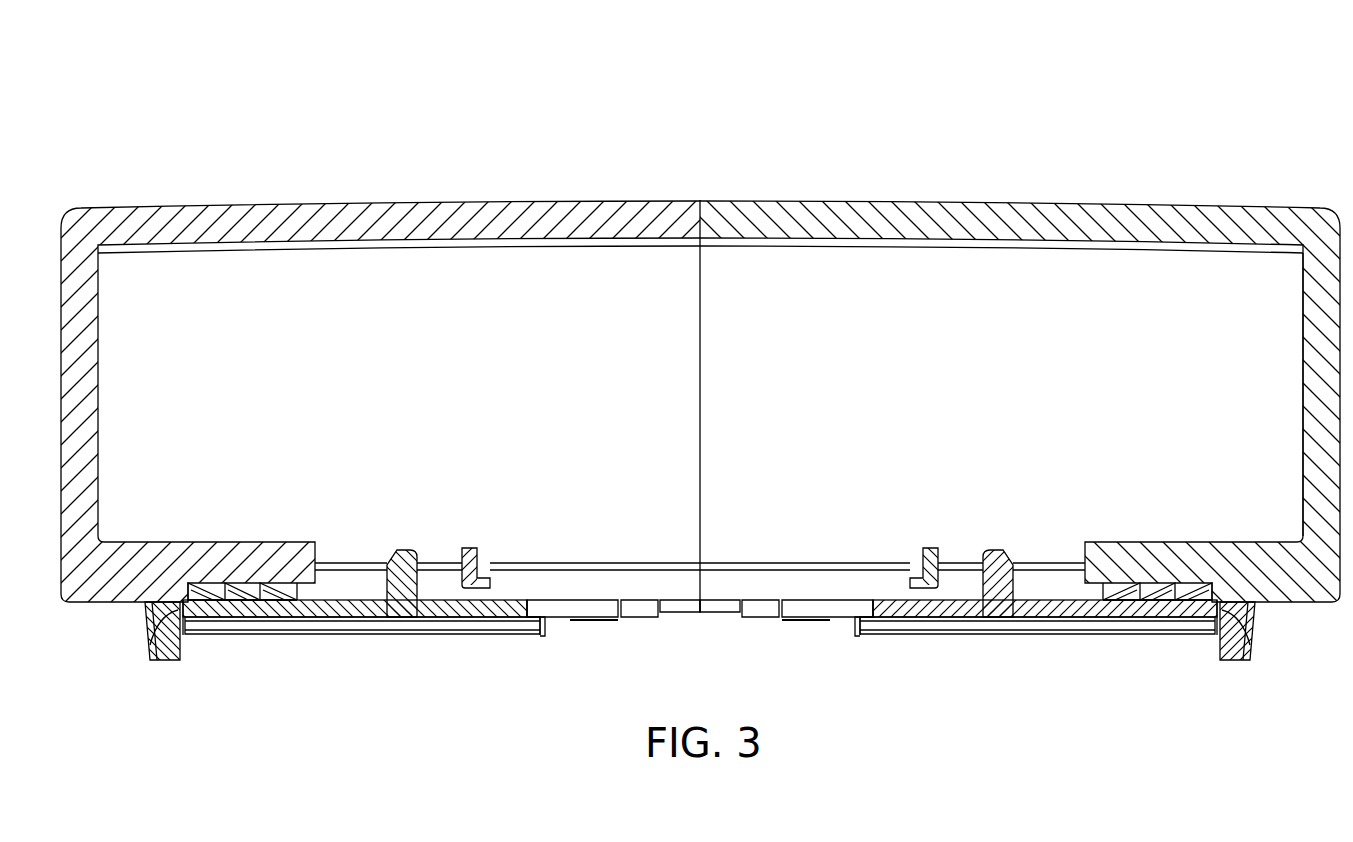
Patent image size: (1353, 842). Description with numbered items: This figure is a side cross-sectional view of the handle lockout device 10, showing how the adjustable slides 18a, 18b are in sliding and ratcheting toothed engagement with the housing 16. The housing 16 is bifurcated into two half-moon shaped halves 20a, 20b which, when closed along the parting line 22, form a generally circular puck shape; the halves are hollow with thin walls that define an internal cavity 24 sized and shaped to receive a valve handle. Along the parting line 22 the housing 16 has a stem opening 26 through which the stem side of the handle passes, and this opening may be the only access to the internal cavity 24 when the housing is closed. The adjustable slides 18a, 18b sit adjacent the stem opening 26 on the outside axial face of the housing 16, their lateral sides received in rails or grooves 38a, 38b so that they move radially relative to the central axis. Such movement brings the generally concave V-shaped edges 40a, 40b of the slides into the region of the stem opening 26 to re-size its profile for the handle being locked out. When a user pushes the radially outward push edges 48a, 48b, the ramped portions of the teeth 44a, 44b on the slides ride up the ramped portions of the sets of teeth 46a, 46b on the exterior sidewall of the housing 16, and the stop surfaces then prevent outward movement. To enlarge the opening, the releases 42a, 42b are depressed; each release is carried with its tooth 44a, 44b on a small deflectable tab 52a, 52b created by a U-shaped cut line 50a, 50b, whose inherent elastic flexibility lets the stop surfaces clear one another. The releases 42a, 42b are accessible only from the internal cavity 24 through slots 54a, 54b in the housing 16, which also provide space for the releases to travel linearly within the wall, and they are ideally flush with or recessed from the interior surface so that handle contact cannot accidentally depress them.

The handle lockout device 10 is at (1185, 99).
The housing 16 is at (733, 220).
The adjustable slide 18a is at (1070, 625).
The adjustable slide 18b is at (330, 625).
The housing half 20a is at (1100, 225).
The housing half 20b is at (308, 225).
The parting line 22 is at (700, 237).
The internal cavity 24 is at (1220, 268).
The stem opening 26 is at (543, 636).
The rails or grooves 38a is at (930, 620).
The rails or grooves 38b is at (428, 620).
The edge 40a is at (872, 605).
The edge 40b is at (528, 605).
The release 42a is at (995, 552).
The release 42b is at (405, 552).
The tooth 44a is at (1138, 600).
The tooth 44b is at (262, 600).
The set of teeth 46a is at (1185, 597).
The set of teeth 46b is at (273, 597).
The push edge 48a is at (1251, 645).
The push edge 48b is at (150, 645).
The U-shaped cut line 50a is at (975, 605).
The U-shaped cut line 50b is at (425, 603).
The deflectable tab 52a is at (1033, 612).
The deflectable tab 52b is at (372, 612).
The slot 54a is at (955, 572).
The slot 54b is at (348, 570).